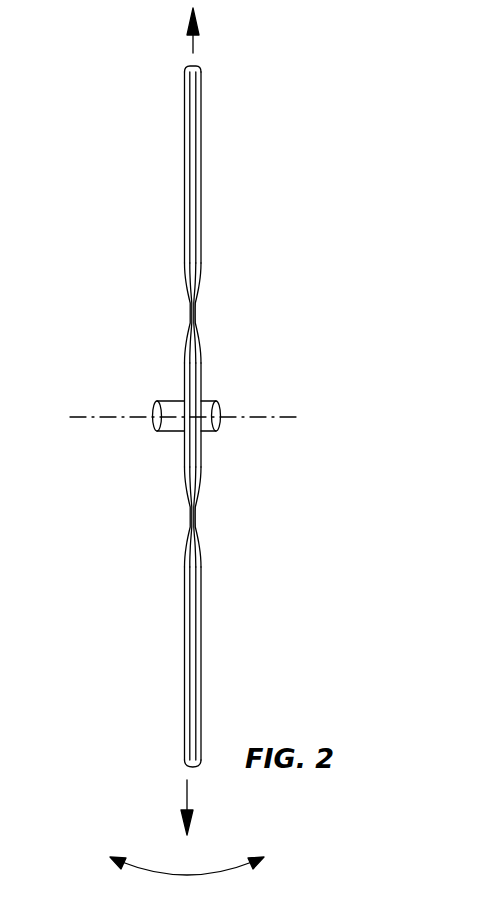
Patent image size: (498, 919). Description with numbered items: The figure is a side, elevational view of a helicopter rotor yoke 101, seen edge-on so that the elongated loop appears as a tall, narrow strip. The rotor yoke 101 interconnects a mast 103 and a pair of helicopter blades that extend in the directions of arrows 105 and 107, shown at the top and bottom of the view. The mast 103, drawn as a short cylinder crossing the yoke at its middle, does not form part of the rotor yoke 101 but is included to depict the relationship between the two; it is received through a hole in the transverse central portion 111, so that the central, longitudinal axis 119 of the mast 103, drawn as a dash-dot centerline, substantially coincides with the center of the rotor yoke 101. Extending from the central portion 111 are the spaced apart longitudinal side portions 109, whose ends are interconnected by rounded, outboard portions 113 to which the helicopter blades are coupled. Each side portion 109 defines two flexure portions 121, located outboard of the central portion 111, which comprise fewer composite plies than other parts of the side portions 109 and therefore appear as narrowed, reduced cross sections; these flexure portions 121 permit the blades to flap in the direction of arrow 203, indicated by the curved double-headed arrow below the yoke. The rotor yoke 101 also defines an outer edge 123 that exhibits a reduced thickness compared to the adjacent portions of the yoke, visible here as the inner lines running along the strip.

The rotor yoke 101 is at (167, 188).
The mast 103 is at (218, 431).
The arrow 105 is at (193, 46).
The arrow 107 is at (187, 798).
The longitudinal side portion 109 is at (196, 201).
The transverse central portion 111 is at (186, 384).
The outboard portion 113 is at (188, 80).
The central longitudinal axis 119 is at (110, 418).
The flexure portion 121 is at (190, 311).
The outer edge 123 is at (192, 130).
The arrow 203 is at (197, 875).